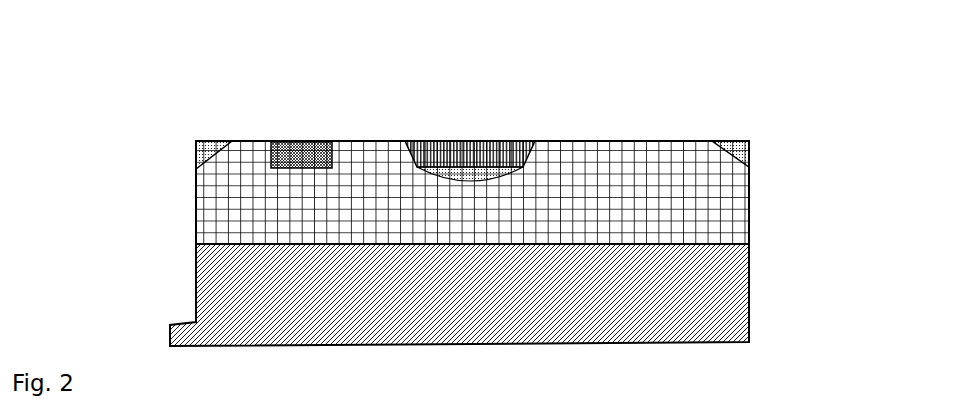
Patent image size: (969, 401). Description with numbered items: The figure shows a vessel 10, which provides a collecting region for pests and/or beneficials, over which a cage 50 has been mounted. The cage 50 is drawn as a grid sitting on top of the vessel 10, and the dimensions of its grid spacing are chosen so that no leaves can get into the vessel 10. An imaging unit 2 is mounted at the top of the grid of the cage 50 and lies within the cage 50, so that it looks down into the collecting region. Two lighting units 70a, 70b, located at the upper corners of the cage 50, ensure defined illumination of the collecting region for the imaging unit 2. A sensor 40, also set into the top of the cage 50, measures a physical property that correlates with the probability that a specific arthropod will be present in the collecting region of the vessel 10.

The vessel 10 is at (186, 282).
The cage 50 is at (760, 211).
The sensor 40 is at (305, 133).
The imaging unit 2 is at (510, 143).
The lighting unit 70a is at (759, 140).
The lighting unit 70b is at (190, 142).